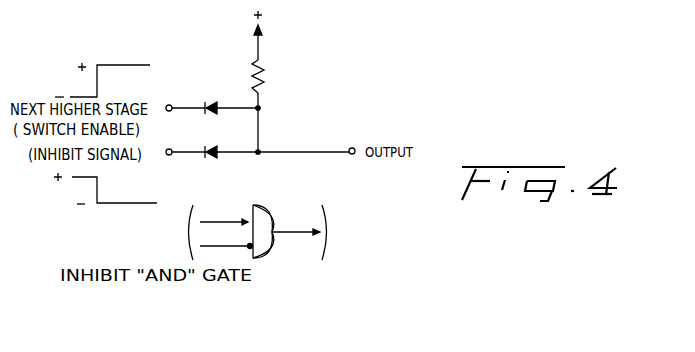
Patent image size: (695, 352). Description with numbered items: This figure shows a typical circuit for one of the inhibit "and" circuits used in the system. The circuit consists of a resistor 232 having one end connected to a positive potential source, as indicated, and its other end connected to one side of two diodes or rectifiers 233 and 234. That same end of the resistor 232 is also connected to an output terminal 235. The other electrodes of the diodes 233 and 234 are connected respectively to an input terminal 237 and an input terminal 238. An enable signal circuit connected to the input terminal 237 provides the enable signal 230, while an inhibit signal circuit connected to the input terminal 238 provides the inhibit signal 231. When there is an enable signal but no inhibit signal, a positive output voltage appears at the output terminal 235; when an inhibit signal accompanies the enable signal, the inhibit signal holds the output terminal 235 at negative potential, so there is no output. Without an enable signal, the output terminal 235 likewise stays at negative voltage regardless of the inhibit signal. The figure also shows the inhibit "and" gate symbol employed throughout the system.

The enable signal 230 is at (100, 79).
The inhibit signal 231 is at (98, 197).
The resistor 232 is at (260, 70).
The diode 233 is at (212, 105).
The diode 234 is at (213, 158).
The output terminal 235 is at (351, 147).
The input terminal 237 is at (169, 104).
The input terminal 238 is at (170, 156).